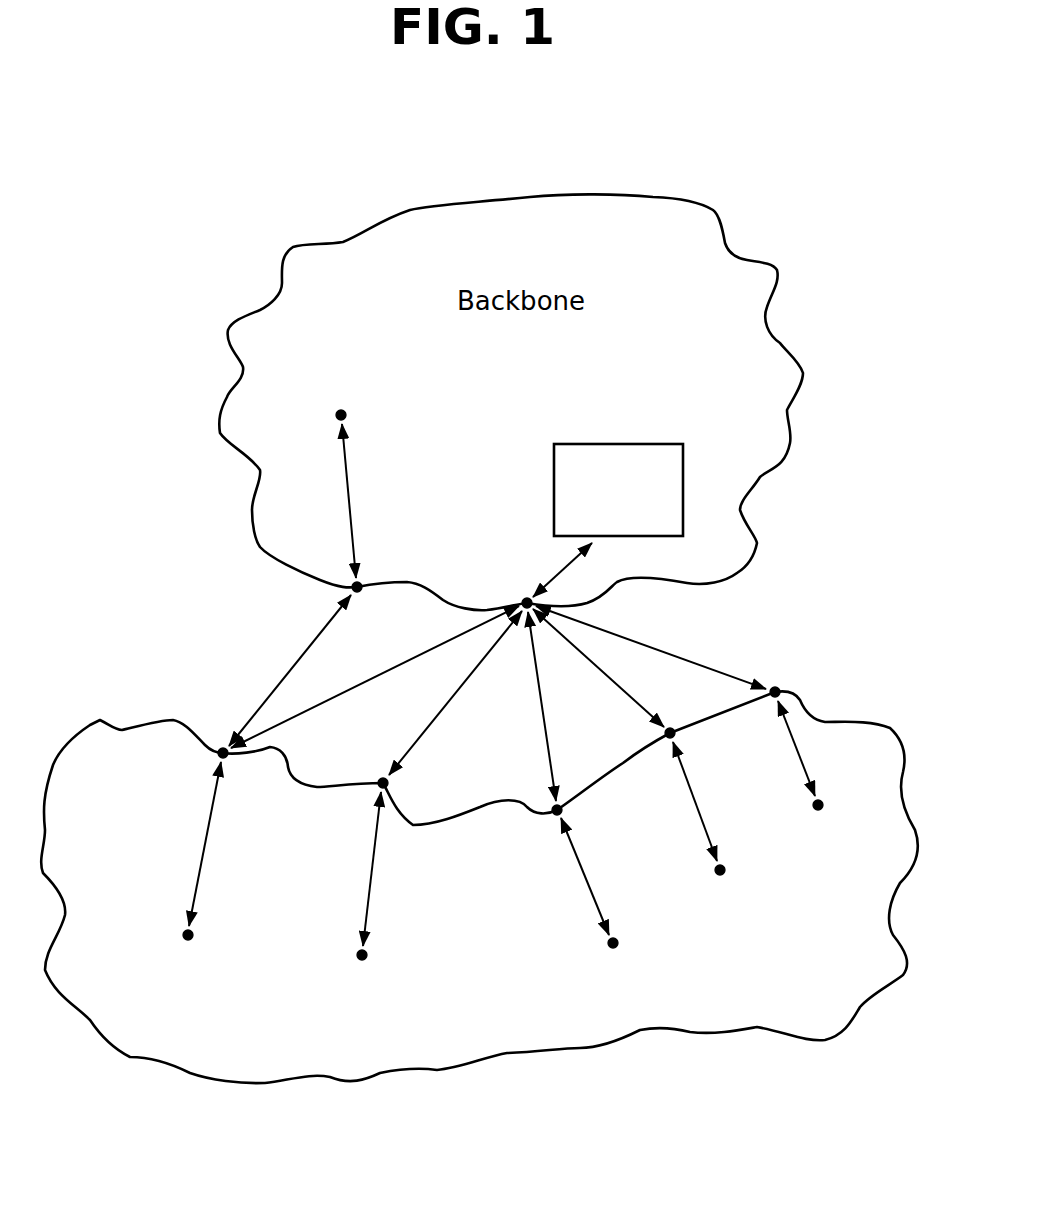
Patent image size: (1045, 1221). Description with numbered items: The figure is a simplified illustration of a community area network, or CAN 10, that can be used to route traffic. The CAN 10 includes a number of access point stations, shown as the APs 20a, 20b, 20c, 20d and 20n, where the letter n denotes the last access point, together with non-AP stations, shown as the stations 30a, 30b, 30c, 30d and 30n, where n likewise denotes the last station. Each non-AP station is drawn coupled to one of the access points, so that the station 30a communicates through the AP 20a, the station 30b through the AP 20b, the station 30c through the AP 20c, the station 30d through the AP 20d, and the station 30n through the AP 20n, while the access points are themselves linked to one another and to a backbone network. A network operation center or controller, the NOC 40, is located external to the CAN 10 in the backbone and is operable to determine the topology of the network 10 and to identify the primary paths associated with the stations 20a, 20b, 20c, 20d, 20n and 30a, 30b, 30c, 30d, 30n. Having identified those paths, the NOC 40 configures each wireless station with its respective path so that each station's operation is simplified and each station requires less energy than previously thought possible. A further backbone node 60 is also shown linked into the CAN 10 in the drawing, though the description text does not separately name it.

The CAN 10 is at (842, 722).
The access point station 20a is at (221, 745).
The access point station 20b is at (378, 779).
The access point station 20c is at (550, 806).
The access point station 20d is at (670, 729).
The access point station 20n is at (775, 688).
The non-AP station 30a is at (193, 937).
The non-AP station 30b is at (367, 957).
The non-AP station 30c is at (608, 945).
The non-AP station 30d is at (725, 871).
The non-AP station 30n is at (823, 806).
The network operation center 40 is at (620, 444).
The backbone network node 60 is at (339, 410).